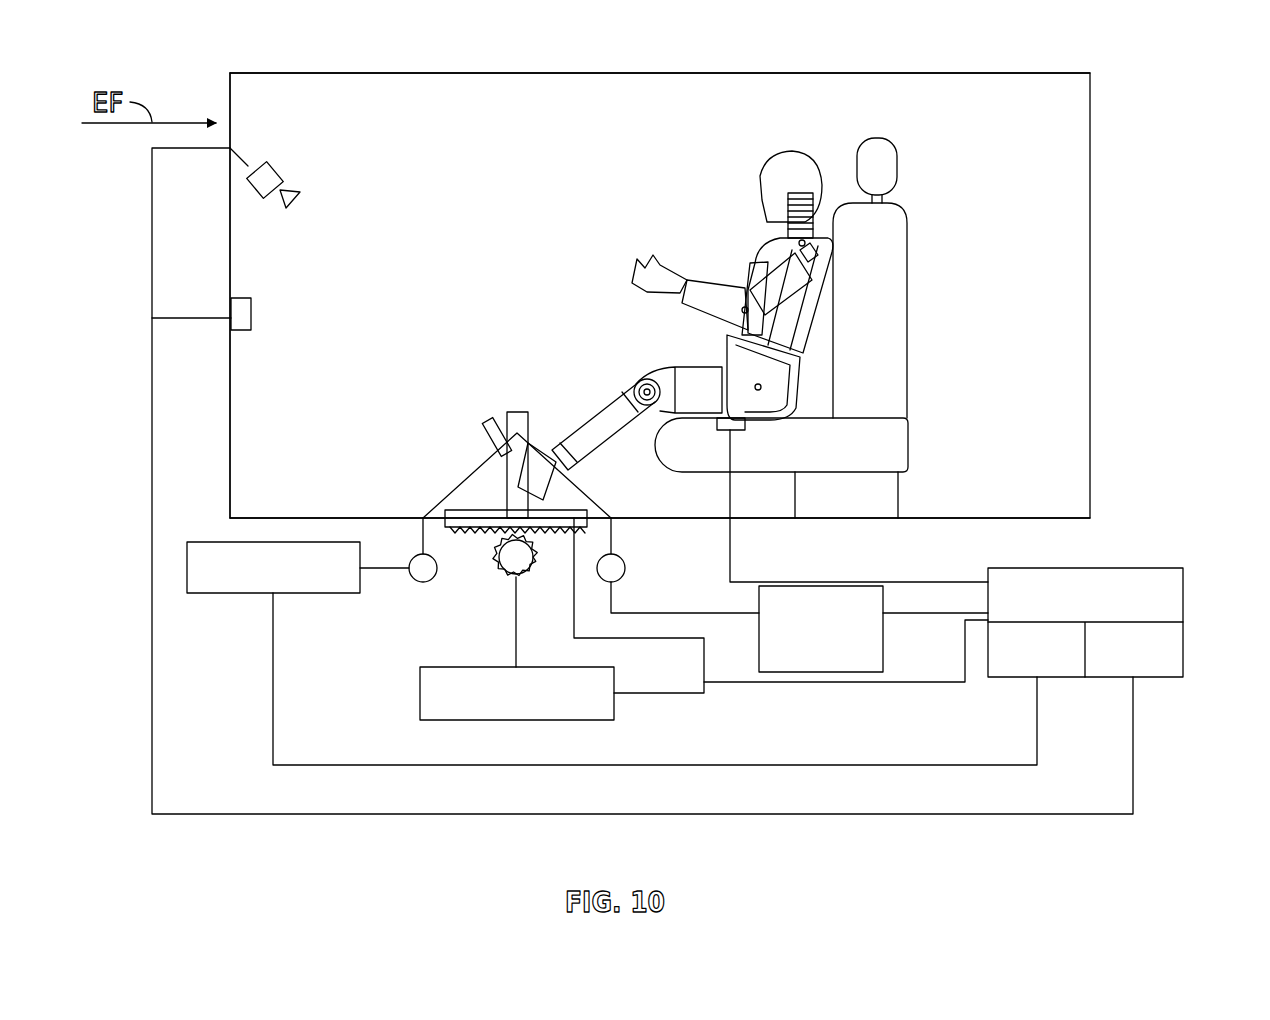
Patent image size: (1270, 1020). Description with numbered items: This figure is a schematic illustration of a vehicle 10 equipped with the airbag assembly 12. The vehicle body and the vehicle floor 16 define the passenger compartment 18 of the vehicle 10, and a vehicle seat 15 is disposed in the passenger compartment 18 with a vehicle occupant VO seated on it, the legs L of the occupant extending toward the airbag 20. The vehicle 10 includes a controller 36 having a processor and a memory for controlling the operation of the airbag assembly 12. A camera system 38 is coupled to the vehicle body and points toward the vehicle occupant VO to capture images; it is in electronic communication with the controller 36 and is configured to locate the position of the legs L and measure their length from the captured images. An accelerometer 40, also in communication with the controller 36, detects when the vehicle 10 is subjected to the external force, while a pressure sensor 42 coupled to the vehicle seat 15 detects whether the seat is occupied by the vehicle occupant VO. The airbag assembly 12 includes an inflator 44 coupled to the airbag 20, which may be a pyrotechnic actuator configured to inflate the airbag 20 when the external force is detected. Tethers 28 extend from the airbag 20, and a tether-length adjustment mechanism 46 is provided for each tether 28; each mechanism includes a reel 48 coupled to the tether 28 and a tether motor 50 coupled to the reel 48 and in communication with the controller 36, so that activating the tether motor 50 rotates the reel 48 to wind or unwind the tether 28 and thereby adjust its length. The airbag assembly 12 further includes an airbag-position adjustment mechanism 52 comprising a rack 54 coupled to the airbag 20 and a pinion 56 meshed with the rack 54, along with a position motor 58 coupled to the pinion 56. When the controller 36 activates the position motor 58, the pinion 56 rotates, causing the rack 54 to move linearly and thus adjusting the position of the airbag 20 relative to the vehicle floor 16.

The vehicle 10 is at (1096, 172).
The airbag assembly 12 is at (230, 96).
The vehicle seat 15 is at (882, 297).
The vehicle floor 16 is at (1042, 517).
The passenger compartment 18 is at (657, 74).
The airbag 20 is at (515, 412).
The tether 28 is at (462, 484).
The controller 36 is at (1184, 596).
The camera system 38 is at (288, 168).
The accelerometer 40 is at (252, 314).
The pressure sensor 42 is at (908, 447).
The inflator 44 is at (497, 534).
The tether-length adjustment mechanism 46 is at (632, 578).
The reel 48 is at (421, 582).
The tether motor 50 is at (310, 594).
The airbag-position adjustment mechanism 52 is at (373, 717).
The rack 54 is at (533, 535).
The pinion 56 is at (511, 578).
The position motor 58 is at (573, 721).
The vehicle occupant VO is at (766, 268).
The legs L is at (602, 425).